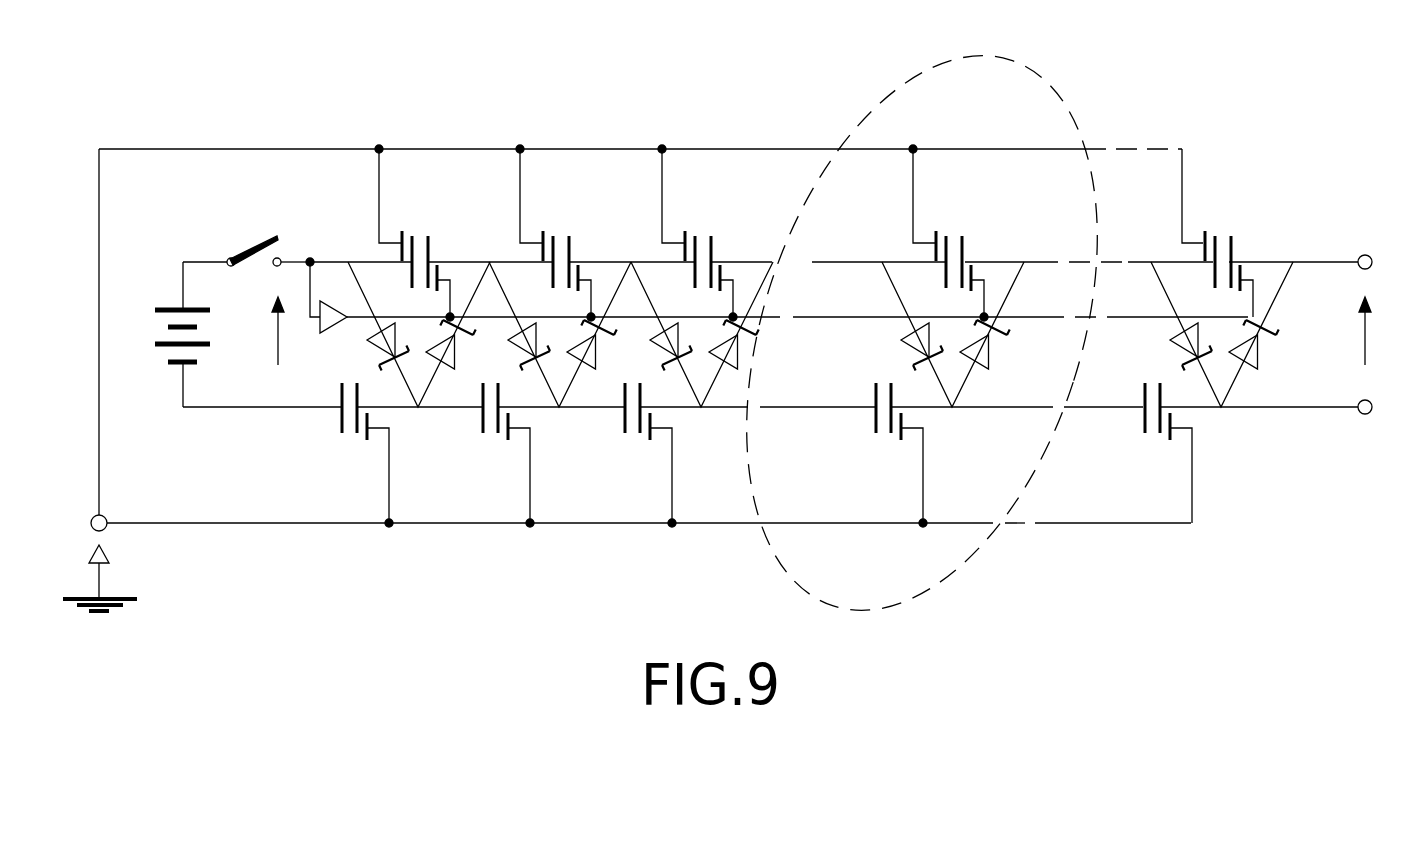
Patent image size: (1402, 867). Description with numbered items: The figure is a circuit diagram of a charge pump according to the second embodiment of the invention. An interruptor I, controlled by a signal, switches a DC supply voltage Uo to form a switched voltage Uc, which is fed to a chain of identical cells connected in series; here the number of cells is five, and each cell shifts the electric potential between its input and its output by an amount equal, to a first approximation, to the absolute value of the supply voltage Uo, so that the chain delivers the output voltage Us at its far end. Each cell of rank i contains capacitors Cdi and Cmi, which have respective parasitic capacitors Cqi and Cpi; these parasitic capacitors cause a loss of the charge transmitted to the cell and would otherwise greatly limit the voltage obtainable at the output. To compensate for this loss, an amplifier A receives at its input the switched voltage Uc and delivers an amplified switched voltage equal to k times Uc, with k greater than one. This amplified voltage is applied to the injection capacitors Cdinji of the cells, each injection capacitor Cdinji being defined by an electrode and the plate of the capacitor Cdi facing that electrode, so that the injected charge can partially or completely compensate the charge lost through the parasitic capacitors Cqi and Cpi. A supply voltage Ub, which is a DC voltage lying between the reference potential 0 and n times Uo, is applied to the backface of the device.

The interruptor I is at (247, 245).
The DC supply voltage Uo is at (193, 270).
The switched voltage Uc is at (219, 352).
The reference potential of 0 V 0 is at (188, 429).
The amplifier A is at (335, 333).
The supply voltage Ub is at (110, 578).
The output voltage Us is at (1380, 334).
The parasitic capacitor Cqi is at (930, 232).
The capacitor Cdi is at (970, 237).
The injection capacitor Cdinji is at (978, 272).
The capacitor Cmi is at (884, 436).
The parasitic capacitor Cpi is at (912, 437).